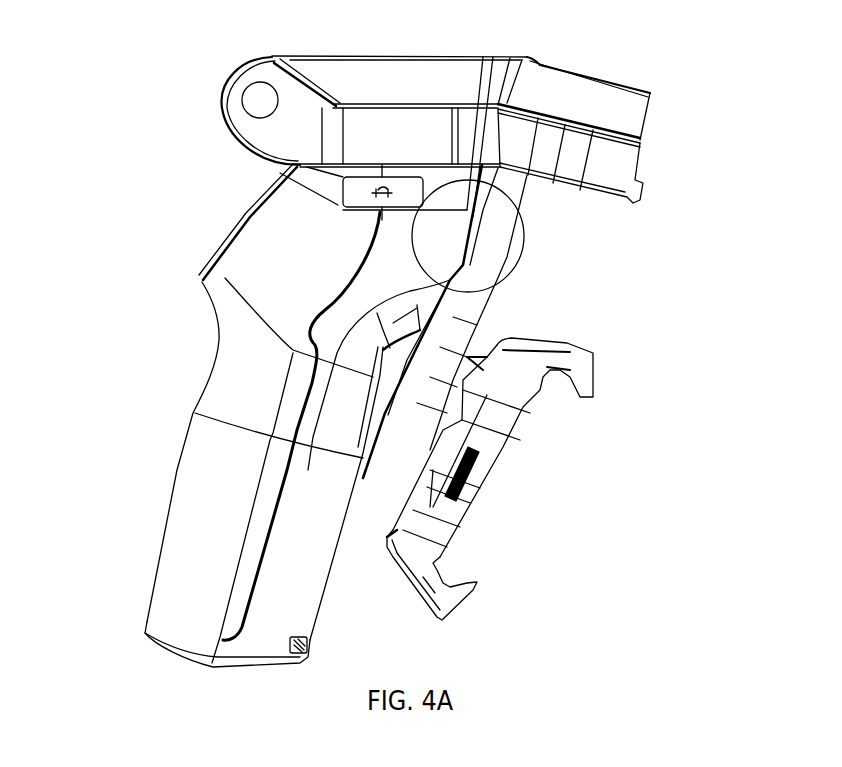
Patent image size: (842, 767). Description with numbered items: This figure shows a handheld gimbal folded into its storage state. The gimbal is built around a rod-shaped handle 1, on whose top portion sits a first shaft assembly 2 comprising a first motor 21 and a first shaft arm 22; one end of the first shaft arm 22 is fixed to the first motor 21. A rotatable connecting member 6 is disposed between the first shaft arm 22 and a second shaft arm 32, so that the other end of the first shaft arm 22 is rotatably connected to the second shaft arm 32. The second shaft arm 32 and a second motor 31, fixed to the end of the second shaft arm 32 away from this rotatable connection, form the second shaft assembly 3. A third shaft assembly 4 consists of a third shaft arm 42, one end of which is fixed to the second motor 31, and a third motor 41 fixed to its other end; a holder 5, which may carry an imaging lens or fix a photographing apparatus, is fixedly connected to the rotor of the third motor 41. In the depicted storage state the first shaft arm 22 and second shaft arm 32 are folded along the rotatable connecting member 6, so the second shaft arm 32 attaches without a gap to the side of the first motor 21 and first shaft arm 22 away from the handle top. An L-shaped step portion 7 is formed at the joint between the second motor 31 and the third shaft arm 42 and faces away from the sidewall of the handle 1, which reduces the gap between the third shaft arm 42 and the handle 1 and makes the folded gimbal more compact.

The handle 1 is at (183, 488).
The first shaft assembly 2 is at (302, 140).
The first motor 21 is at (357, 141).
The first shaft arm 22 is at (263, 135).
The second shaft assembly 3 is at (641, 130).
The second motor 31 is at (628, 152).
The second shaft arm 32 is at (633, 117).
The third shaft assembly 4 is at (557, 392).
The third motor 41 is at (457, 413).
The third shaft arm 42 is at (513, 282).
The holder 5 is at (490, 480).
The rotatable connecting member 6 is at (248, 92).
The step portion 7 is at (540, 177).